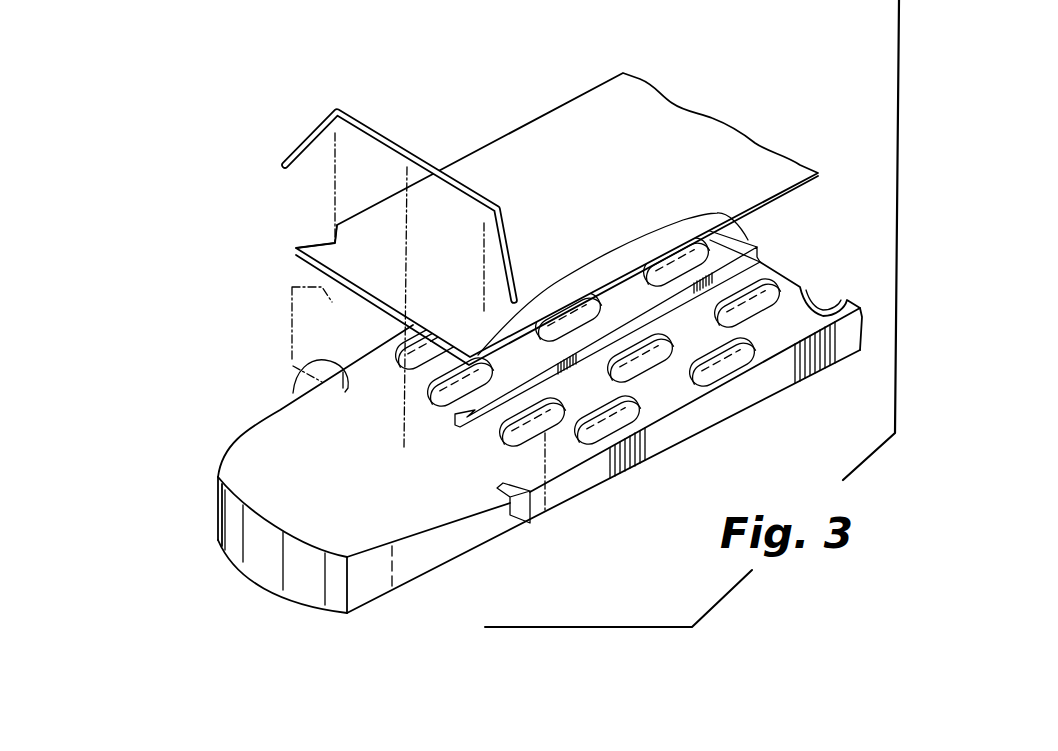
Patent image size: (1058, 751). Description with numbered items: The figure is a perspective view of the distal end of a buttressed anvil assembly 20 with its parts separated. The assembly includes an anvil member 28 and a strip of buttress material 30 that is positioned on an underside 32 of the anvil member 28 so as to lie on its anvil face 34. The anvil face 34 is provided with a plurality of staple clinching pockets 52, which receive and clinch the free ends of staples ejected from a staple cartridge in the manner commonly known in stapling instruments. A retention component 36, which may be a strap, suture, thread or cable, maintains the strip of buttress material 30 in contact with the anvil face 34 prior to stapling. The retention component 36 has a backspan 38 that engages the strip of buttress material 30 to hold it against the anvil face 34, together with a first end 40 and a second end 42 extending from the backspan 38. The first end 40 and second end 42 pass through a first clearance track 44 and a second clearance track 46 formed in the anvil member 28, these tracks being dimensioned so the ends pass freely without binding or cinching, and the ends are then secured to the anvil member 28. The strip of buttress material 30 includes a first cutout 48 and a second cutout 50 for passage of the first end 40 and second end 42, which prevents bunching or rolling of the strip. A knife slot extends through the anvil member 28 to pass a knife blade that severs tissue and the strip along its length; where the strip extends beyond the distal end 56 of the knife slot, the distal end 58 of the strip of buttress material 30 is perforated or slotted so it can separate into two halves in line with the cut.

The buttressed anvil assembly 20 is at (128, 357).
The anvil member 28 is at (236, 429).
The strip of buttress material 30 is at (723, 138).
The underside 32 is at (270, 459).
The anvil face 34 is at (563, 457).
The retention component 36 is at (386, 127).
The backspan 38 is at (425, 165).
The first end 40 is at (513, 257).
The second end 42 is at (316, 152).
The first clearance track 44 is at (522, 520).
The second clearance track 46 is at (293, 366).
The first cutout 48 is at (757, 213).
The second cutout 50 is at (318, 236).
The staple clinching pockets 52 is at (735, 236).
The distal end of knife slot 56 is at (460, 418).
The distal end of strip of buttress material 58 is at (402, 296).